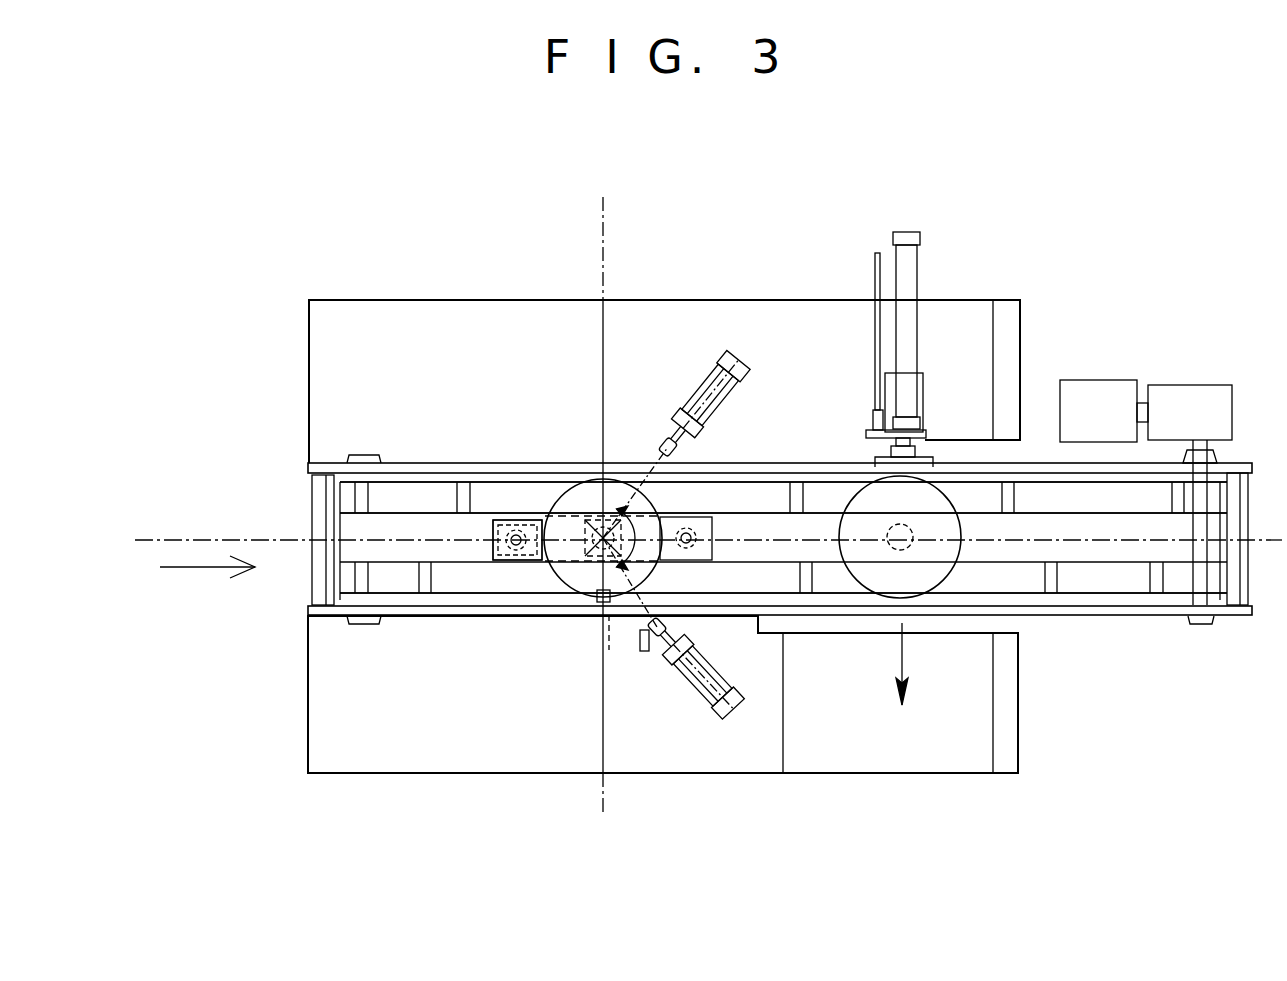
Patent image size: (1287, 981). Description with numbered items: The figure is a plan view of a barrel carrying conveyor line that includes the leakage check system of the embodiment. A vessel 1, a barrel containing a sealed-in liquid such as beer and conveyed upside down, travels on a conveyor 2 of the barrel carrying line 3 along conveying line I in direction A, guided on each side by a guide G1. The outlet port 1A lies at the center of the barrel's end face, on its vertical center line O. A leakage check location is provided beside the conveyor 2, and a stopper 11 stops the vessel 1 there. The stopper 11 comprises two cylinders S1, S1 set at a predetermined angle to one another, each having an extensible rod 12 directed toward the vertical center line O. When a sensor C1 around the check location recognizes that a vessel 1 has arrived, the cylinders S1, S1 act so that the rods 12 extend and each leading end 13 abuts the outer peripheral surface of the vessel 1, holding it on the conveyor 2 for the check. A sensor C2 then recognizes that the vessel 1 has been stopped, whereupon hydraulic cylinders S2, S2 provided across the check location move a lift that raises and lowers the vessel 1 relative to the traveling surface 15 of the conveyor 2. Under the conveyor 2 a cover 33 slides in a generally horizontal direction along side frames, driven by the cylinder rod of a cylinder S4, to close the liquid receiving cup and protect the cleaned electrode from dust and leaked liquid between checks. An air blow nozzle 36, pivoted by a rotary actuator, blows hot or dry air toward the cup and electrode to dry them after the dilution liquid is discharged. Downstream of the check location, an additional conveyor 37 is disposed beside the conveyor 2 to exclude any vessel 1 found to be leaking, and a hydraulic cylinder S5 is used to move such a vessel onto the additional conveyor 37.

The vessel 1 is at (560, 510).
The outlet port 1A is at (912, 520).
The conveyor 2 is at (435, 492).
The barrel carrying line 3 is at (405, 525).
The stopper 11 is at (715, 340).
The extensible rod 12 is at (662, 452).
The leading end 13 is at (690, 456).
The traveling surface 15 is at (420, 500).
The cover 33 is at (592, 575).
The air blow nozzle 36 is at (601, 620).
The additional conveyor 37 is at (975, 725).
The cylinder S1 is at (695, 425).
The hydraulic cylinder S2 is at (498, 558).
The cylinder S4 is at (520, 520).
The hydraulic cylinder S5 is at (908, 267).
The guide G1 is at (840, 462).
The sensor C1 is at (645, 652).
The sensor C2 is at (712, 632).
The vertical center line O is at (600, 535).
The conveying line I is at (190, 538).
The conveying direction A is at (207, 581).